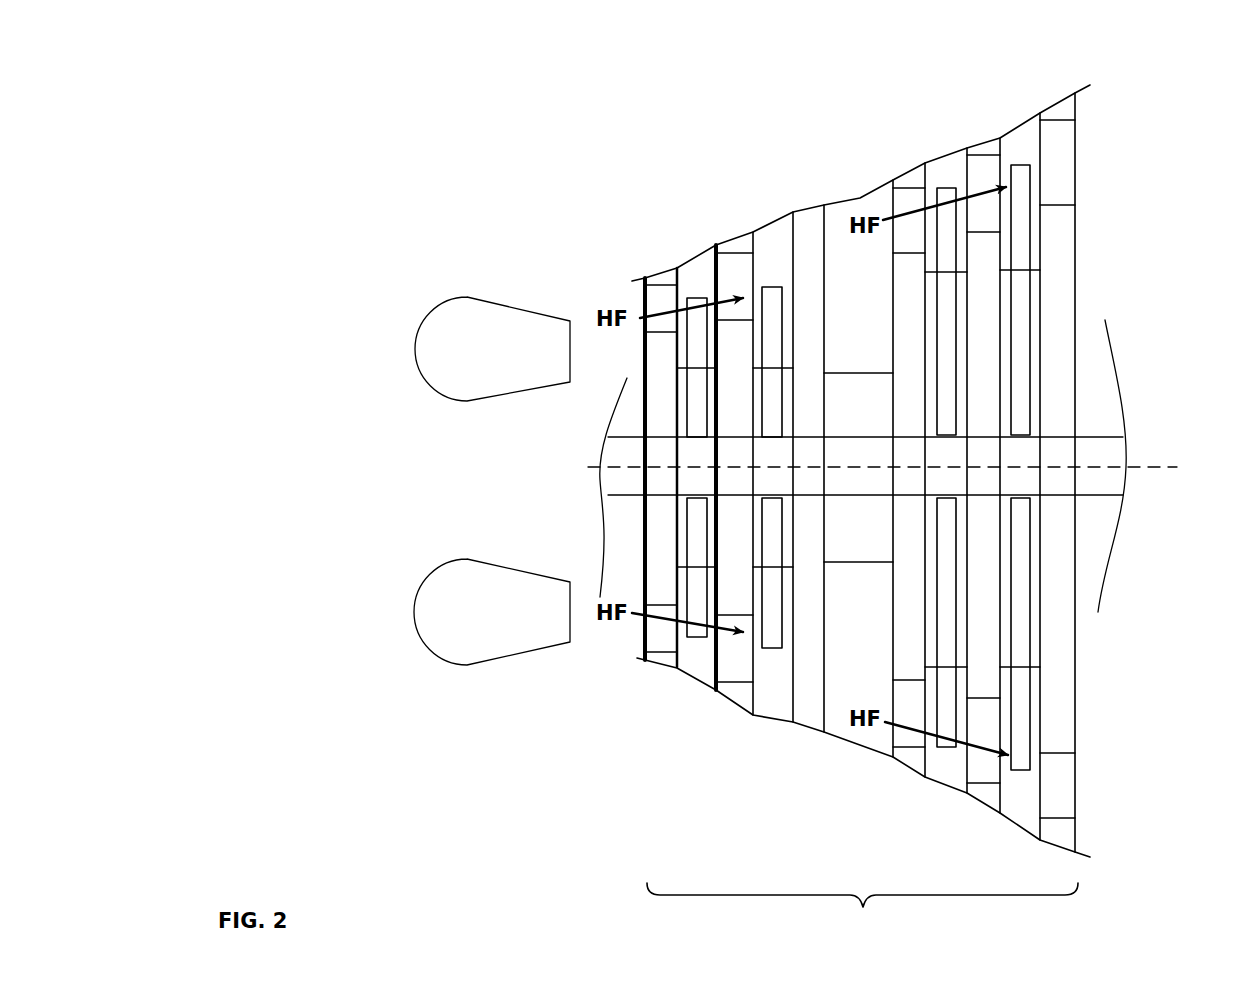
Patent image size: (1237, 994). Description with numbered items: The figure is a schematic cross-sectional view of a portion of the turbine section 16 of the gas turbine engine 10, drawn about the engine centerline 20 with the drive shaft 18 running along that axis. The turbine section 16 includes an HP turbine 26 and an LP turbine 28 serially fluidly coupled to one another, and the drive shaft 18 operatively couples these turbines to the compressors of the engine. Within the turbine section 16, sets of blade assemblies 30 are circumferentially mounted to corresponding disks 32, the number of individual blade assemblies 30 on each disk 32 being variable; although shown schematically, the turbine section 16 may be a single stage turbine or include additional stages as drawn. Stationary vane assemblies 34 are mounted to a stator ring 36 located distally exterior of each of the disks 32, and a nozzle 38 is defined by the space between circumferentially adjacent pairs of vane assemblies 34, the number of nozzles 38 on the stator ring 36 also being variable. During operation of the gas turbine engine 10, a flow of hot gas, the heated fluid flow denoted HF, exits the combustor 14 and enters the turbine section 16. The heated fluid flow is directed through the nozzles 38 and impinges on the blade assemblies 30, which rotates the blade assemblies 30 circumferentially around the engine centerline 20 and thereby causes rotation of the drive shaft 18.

The gas turbine engine 10 is at (498, 141).
The combustor 14 is at (473, 323).
The turbine section 16 is at (862, 910).
The drive shaft 18 is at (1105, 445).
The engine centerline 20 is at (1156, 467).
The HP turbine 26 is at (746, 720).
The LP turbine 28 is at (973, 805).
The blade assemblies 30 is at (698, 338).
The disks 32 is at (697, 558).
The stationary vane assemblies 34 is at (657, 297).
The stator ring 36 is at (665, 393).
The nozzle 38 is at (1085, 193).